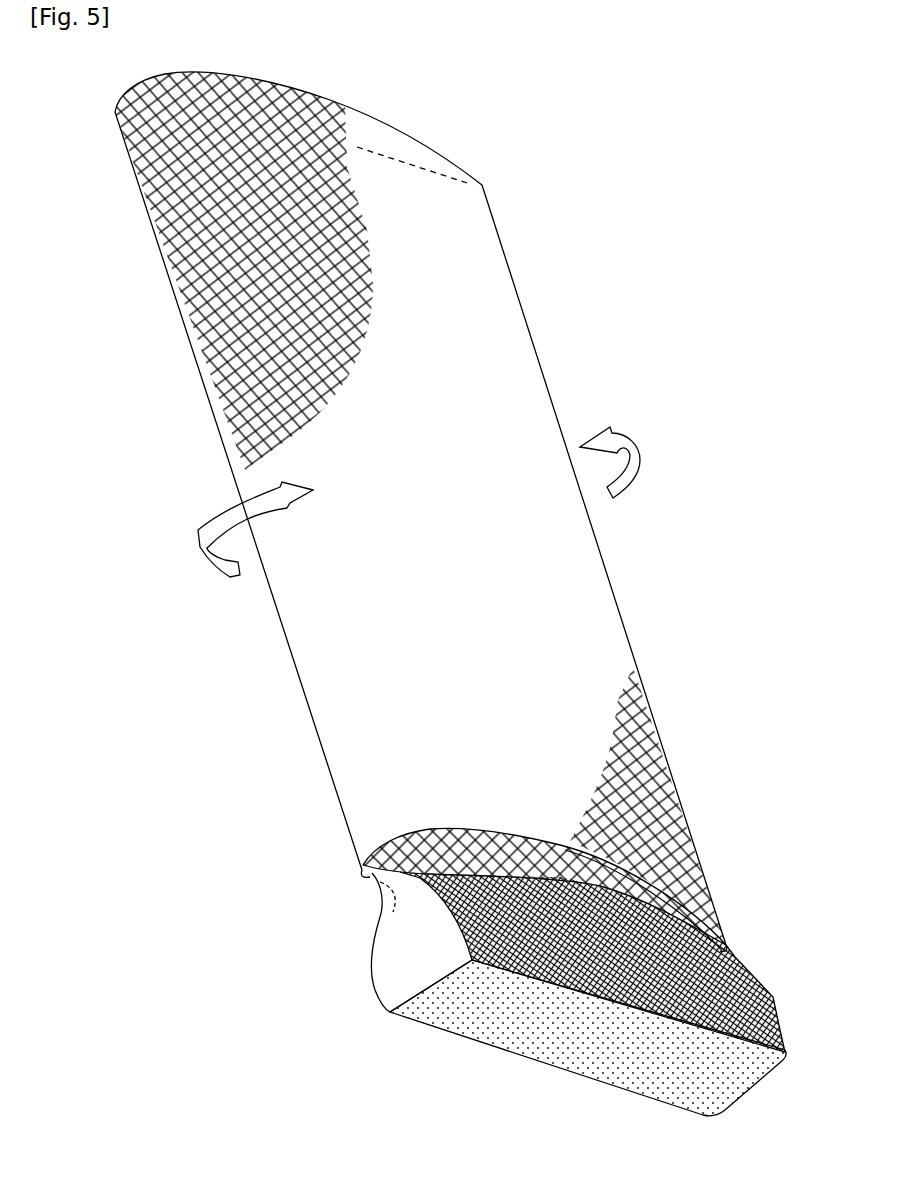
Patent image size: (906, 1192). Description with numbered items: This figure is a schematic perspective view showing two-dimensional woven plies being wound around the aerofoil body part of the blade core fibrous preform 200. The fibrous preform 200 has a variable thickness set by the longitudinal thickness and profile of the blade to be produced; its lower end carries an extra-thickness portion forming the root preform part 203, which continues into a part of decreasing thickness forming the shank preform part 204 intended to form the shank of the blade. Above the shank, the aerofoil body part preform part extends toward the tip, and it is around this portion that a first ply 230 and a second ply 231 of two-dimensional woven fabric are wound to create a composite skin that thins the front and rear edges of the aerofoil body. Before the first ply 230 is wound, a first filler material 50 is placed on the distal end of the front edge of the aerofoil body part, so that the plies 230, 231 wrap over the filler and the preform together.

The first filler material 50 is at (368, 873).
The blade core fibrous preform 200 is at (484, 1052).
The root preform part 203 is at (392, 968).
The shank preform part 204 is at (378, 916).
The first ply 230 is at (715, 937).
The second ply 231 is at (567, 580).